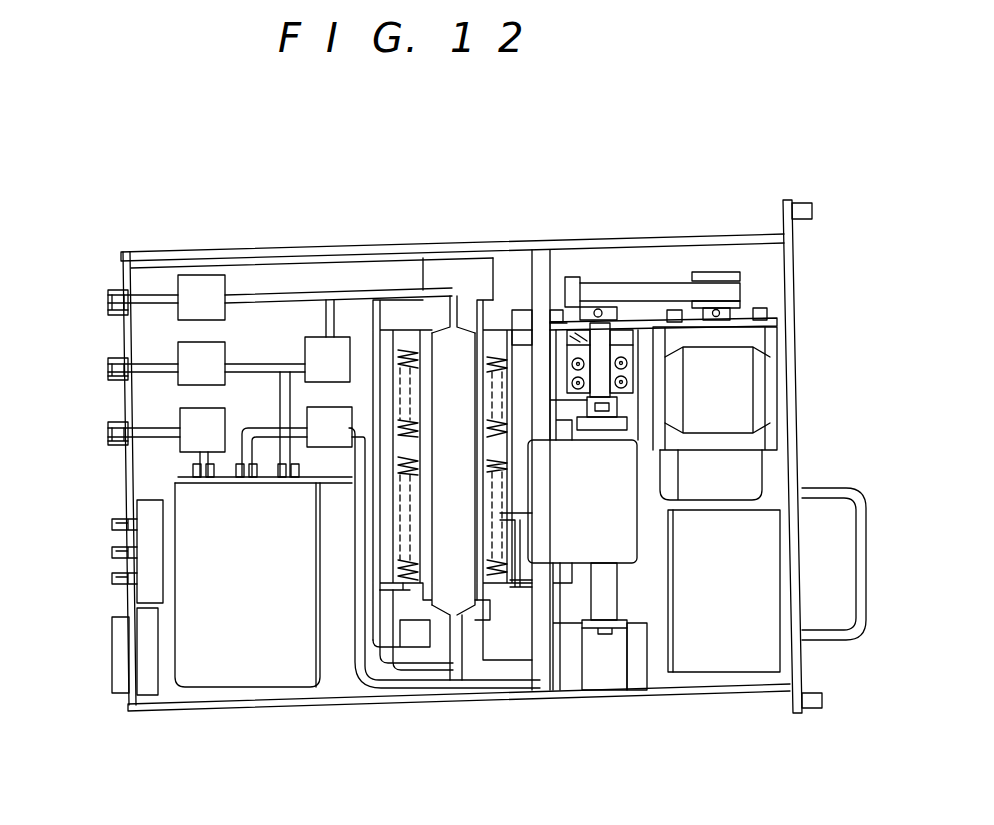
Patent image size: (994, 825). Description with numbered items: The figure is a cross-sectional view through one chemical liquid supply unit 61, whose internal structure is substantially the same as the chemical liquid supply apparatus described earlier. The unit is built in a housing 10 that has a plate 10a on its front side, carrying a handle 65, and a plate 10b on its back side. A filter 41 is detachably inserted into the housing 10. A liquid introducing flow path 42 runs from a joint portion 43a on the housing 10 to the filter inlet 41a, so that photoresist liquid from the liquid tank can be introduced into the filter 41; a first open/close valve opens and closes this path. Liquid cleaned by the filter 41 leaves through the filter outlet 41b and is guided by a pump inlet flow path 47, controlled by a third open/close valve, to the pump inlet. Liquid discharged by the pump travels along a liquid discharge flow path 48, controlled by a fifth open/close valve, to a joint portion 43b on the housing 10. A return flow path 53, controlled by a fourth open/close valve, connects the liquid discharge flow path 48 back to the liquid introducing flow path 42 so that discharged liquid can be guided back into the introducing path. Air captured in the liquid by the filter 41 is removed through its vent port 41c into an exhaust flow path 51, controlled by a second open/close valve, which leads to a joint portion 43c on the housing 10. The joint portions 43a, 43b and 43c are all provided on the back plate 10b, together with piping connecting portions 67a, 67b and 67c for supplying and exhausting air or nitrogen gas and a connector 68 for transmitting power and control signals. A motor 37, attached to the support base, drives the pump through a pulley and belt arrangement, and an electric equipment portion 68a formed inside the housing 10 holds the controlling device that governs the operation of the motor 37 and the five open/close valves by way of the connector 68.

The housing 10 is at (685, 235).
The plate 10a is at (797, 436).
The plate 10b is at (128, 493).
The motor 37 is at (742, 397).
The filter 41 is at (248, 677).
The filter inlet 41a is at (290, 483).
The filter outlet 41b is at (243, 487).
The vent port 41c is at (200, 478).
The liquid introducing flow path 42 is at (243, 364).
The joint portion 43a is at (115, 358).
The joint portion 43b is at (113, 290).
The joint portion 43c is at (118, 428).
The pump inlet flow path 47 is at (263, 425).
The liquid discharge flow path 48 is at (277, 290).
The exhaust flow path 51 is at (197, 468).
The return flow path 53 is at (330, 318).
The chemical liquid supply unit 61 is at (543, 210).
The handle 65 is at (852, 632).
The piping connecting portion 67a is at (110, 527).
The piping connecting portion 67b is at (110, 557).
The piping connecting portion 67c is at (110, 583).
The connector 68 is at (118, 690).
The electric equipment portion 68a is at (692, 662).